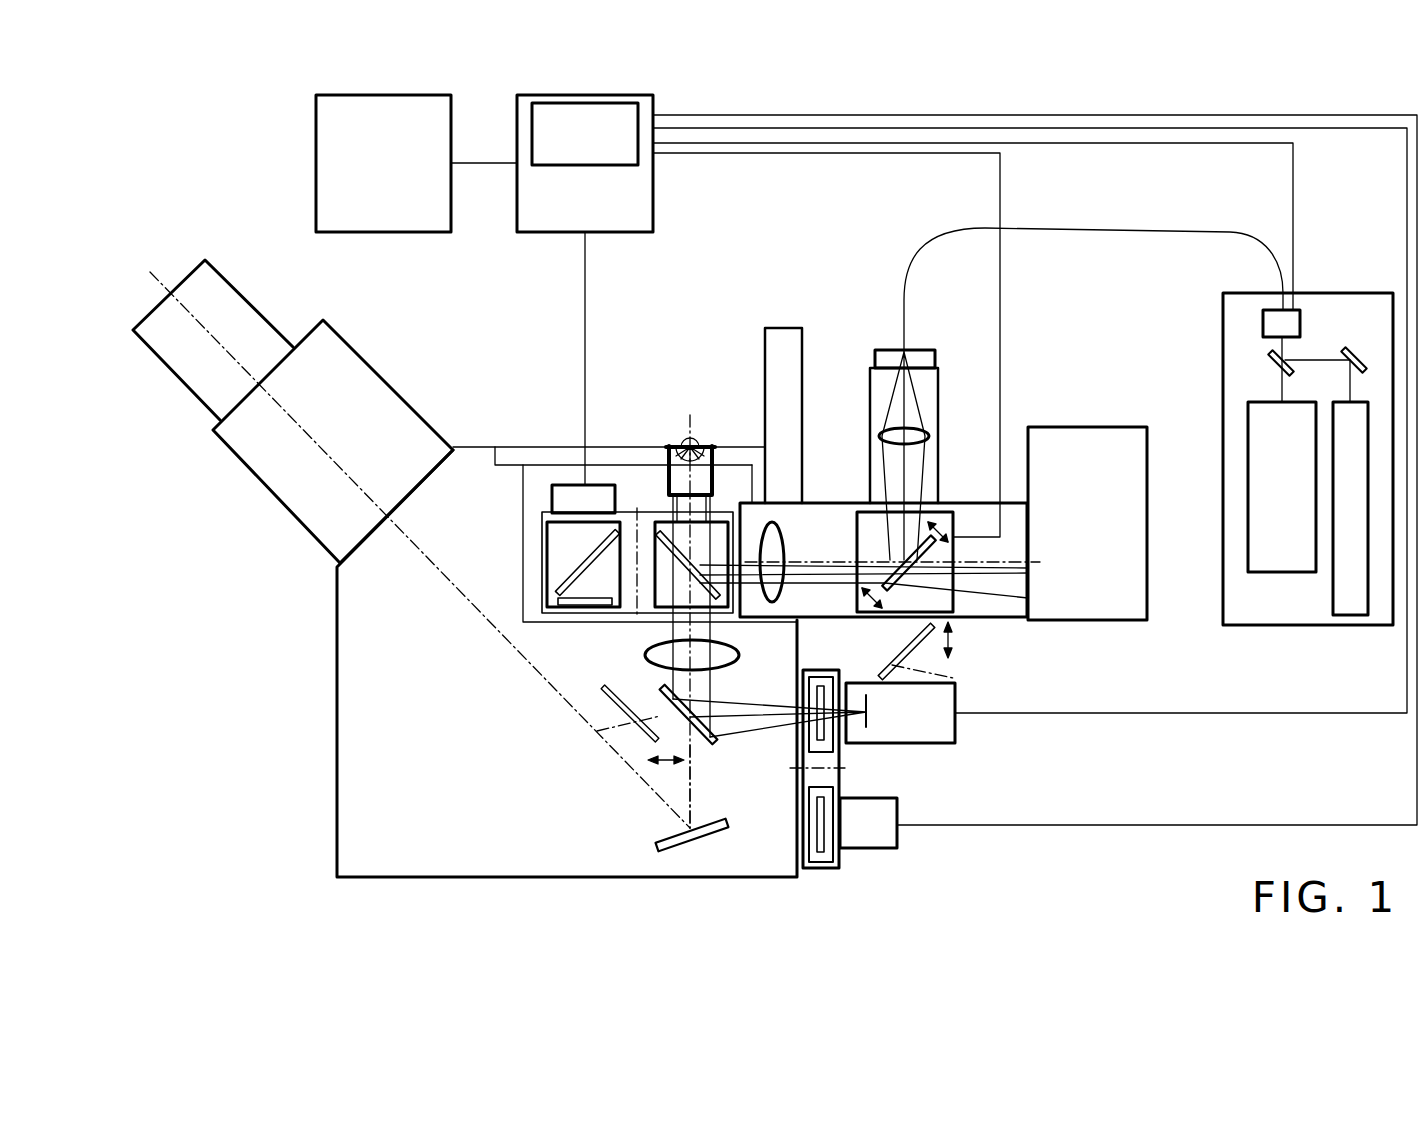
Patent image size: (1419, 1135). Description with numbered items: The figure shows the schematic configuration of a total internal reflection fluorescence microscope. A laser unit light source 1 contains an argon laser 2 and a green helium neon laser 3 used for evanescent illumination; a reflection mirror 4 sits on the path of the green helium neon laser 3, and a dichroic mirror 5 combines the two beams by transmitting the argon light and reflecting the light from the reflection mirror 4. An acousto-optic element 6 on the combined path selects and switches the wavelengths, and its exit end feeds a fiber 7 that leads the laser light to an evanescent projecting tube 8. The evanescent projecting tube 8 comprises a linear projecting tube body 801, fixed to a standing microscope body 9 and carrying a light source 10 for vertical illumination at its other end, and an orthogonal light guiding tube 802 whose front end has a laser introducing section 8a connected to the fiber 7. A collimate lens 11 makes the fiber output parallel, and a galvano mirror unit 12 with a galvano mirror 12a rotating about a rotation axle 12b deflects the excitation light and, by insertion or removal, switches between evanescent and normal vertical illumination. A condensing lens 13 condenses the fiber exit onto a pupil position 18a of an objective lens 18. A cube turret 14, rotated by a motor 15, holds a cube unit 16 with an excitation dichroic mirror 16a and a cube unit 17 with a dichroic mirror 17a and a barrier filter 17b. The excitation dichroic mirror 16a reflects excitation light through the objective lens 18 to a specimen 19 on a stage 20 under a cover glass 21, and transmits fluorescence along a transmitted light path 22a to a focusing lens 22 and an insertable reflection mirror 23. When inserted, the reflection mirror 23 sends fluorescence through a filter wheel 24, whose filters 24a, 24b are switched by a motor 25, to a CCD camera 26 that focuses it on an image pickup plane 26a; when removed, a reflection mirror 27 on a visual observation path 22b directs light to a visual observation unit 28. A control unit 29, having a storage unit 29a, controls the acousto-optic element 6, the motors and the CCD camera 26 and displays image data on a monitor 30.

The laser unit light source 1 is at (1308, 481).
The argon laser 2 is at (1253, 459).
The green helium neon laser 3 is at (1350, 515).
The reflection mirror 4 is at (1326, 341).
The dichroic mirror 5 is at (1242, 346).
The acousto-optic element 6 is at (1300, 317).
The fiber 7 is at (1093, 265).
The evanescent projecting tube 8 is at (870, 527).
The laser introducing section 8a is at (929, 350).
The standing microscope body 9 is at (476, 574).
The light source for vertical illumination 10 is at (1087, 498).
The collimate lens 11 is at (933, 418).
The galvano mirror unit 12 is at (919, 540).
The galvano mirror 12a is at (974, 570).
The rotation axle 12b is at (990, 618).
The condensing lens 13 is at (792, 557).
The cube turret 14 is at (637, 581).
The motor 15 is at (570, 459).
The cube unit 16 is at (718, 587).
The excitation dichroic mirror 16a is at (665, 534).
The cube unit 17 is at (548, 548).
The dichroic mirror 17a is at (540, 562).
The barrier filter 17b is at (537, 582).
The objective lens 18 is at (676, 588).
The pupil position 18a is at (656, 448).
The specimen 19 is at (699, 413).
The stage 20 is at (609, 435).
The cover glass 21 is at (705, 421).
The focusing lens 22 is at (610, 663).
The transmitted light path 22a is at (763, 704).
The visual observation path 22b is at (726, 786).
The reflection mirror 23 is at (596, 724).
The filter wheel 24 is at (837, 781).
The filter 24a is at (859, 729).
The filter 24b is at (806, 851).
The motor 25 is at (888, 832).
The CCD camera 26 is at (926, 720).
The image pickup plane 26a is at (852, 677).
The reflection mirror 27 is at (711, 839).
The visual observation unit 28 is at (293, 411).
The control unit 29 is at (967, 438).
The storage unit 29a is at (597, 108).
The monitor 30 is at (416, 141).
The projecting tube body 801 is at (962, 657).
The light guiding tube 802 is at (931, 456).